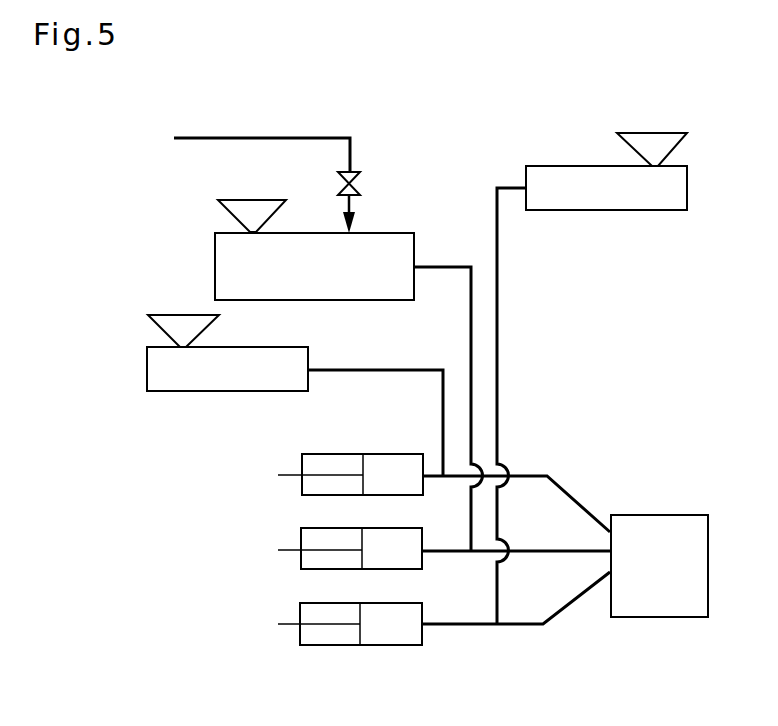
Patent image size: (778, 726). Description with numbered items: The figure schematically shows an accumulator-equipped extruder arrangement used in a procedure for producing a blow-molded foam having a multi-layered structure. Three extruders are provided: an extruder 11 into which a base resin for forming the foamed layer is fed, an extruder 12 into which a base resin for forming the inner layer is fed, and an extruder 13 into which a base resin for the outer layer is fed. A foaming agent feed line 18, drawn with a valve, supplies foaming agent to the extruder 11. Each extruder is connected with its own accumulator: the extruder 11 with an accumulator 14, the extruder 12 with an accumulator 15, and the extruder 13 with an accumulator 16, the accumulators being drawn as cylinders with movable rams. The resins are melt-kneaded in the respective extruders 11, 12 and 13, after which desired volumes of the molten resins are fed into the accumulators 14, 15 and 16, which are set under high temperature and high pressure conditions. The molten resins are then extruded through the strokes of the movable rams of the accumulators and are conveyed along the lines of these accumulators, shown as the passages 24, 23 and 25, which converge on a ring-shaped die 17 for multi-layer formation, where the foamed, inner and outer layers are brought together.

The extruder 11 is at (382, 233).
The extruder 12 is at (273, 347).
The extruder 13 is at (677, 166).
The accumulator 14 is at (393, 569).
The accumulator 15 is at (402, 453).
The accumulator 16 is at (393, 645).
The ring-shaped die 17 is at (670, 515).
The foaming agent feed line 18 is at (310, 138).
The central flow passage 23 is at (565, 551).
The upper flow passage 24 is at (575, 492).
The lower flow passage 25 is at (575, 607).